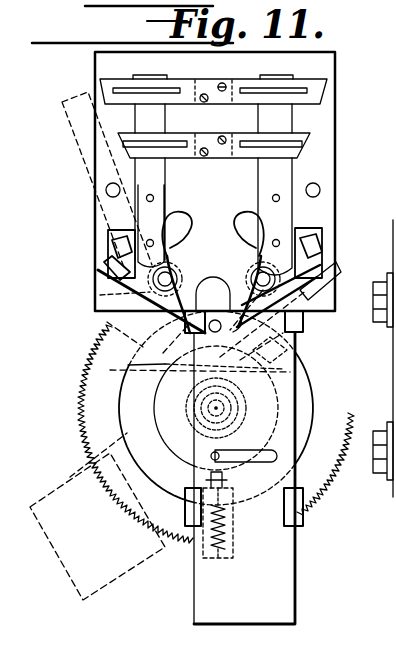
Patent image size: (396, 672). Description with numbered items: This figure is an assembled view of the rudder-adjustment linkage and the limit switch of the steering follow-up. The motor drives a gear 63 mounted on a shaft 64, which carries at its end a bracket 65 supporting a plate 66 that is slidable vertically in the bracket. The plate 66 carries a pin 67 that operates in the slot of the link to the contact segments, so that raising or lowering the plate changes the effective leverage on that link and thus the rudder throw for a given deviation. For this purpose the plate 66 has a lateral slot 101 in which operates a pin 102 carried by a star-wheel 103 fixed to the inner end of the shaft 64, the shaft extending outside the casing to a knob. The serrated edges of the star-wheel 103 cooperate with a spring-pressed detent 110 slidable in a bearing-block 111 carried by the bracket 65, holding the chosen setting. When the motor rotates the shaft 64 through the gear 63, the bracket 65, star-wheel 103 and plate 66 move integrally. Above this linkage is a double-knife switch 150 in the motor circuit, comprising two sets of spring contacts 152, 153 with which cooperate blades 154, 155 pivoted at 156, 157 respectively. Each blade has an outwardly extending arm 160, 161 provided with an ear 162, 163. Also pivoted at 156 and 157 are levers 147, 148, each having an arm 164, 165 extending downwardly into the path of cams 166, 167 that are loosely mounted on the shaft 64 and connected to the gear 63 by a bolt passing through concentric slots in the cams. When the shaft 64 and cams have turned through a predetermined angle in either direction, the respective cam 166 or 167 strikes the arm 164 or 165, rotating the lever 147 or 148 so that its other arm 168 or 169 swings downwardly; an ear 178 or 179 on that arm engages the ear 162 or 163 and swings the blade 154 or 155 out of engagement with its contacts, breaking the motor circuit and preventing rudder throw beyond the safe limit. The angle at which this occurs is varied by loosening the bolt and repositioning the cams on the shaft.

The switch 150 is at (213, 82).
The spring contacts 153 is at (122, 107).
The spring contacts 152 is at (305, 106).
The blade 155 is at (142, 172).
The blade 154 is at (288, 171).
The lever 148 is at (172, 218).
The lever 147 is at (245, 215).
The pivot 157 is at (168, 272).
The pivot 156 is at (261, 272).
The arm 169 is at (127, 232).
The ear 179 is at (112, 242).
The arm 161 is at (102, 270).
The ear 163 is at (102, 276).
The arm 168 is at (300, 242).
The ear 178 is at (324, 243).
The ear 162 is at (312, 288).
The arm 160 is at (292, 287).
The pin 67 is at (214, 320).
The arm 164 is at (242, 327).
The bracket 65 is at (305, 325).
The plate 66 is at (244, 478).
The cam 167 is at (130, 383).
The star-wheel 103 is at (158, 403).
The cam 166 is at (305, 395).
The shaft 64 is at (214, 407).
The arm 165 is at (192, 325).
The gear 63 is at (114, 500).
The lateral slot 101 is at (262, 453).
The pin 102 is at (208, 457).
The spring-pressed detent 110 is at (223, 476).
The bearing-block 111 is at (234, 538).